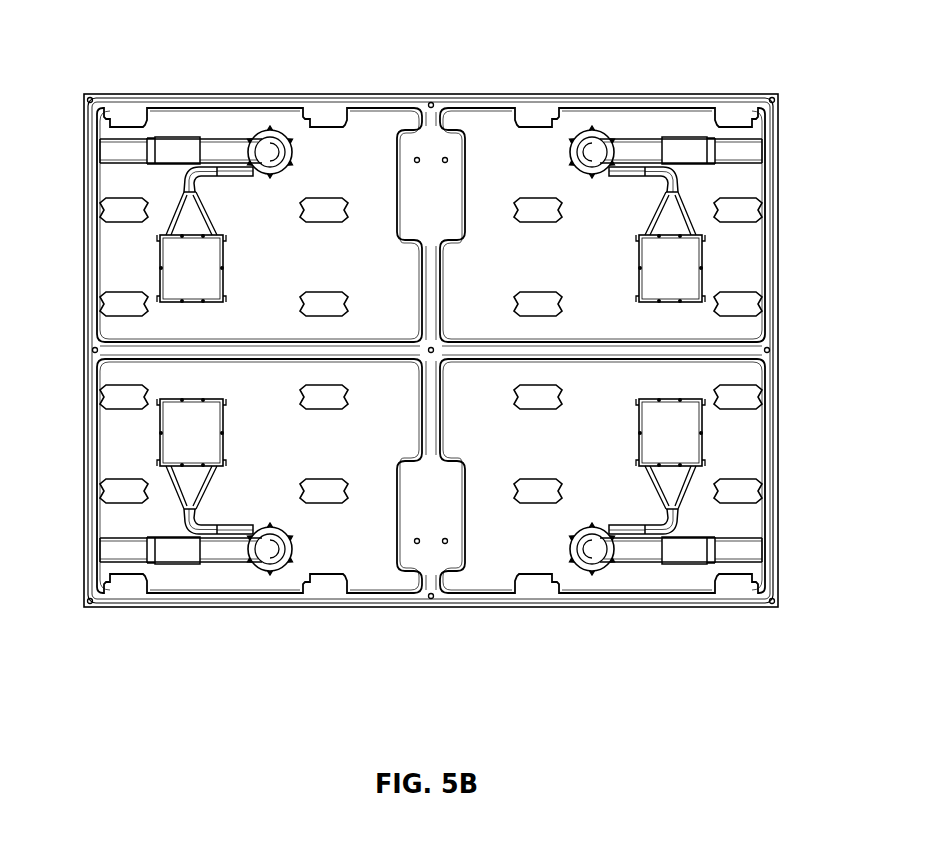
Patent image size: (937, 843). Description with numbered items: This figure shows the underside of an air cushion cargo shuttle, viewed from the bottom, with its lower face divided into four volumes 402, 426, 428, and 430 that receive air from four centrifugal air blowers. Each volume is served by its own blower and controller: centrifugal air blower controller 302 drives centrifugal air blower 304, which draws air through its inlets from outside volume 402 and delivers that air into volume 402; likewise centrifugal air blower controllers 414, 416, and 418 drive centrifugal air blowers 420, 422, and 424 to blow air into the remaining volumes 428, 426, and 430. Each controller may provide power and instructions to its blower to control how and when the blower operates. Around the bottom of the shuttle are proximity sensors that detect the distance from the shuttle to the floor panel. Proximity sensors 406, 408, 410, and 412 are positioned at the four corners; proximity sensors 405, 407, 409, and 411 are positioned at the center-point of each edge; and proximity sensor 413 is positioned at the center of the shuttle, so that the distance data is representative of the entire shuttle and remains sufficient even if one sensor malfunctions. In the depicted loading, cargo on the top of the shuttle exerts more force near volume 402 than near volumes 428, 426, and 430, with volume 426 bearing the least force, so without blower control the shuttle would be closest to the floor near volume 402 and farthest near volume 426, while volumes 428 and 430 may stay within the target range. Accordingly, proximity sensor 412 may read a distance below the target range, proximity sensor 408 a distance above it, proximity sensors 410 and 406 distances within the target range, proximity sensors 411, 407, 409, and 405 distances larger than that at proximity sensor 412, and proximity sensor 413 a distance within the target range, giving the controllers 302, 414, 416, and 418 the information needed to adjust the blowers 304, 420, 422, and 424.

The centrifugal air blower controller 302 is at (177, 446).
The centrifugal air blower 304 is at (240, 556).
The volume 402 is at (296, 577).
The proximity sensor 405 is at (770, 350).
The proximity sensor 406 is at (776, 606).
The proximity sensor 407 is at (431, 599).
The proximity sensor 408 is at (772, 97).
The proximity sensor 409 is at (437, 102).
The proximity sensor 410 is at (91, 97).
The proximity sensor 411 is at (92, 351).
The proximity sensor 412 is at (87, 601).
The proximity sensor 413 is at (435, 356).
The centrifugal air blower controller 414 is at (178, 257).
The centrifugal air blower controller 416 is at (690, 250).
The centrifugal air blower controller 418 is at (690, 440).
The centrifugal air blower 420 is at (276, 131).
The centrifugal air blower 422 is at (600, 136).
The centrifugal air blower 424 is at (598, 564).
The volume 426 is at (539, 140).
The volume 428 is at (366, 142).
The volume 430 is at (500, 577).